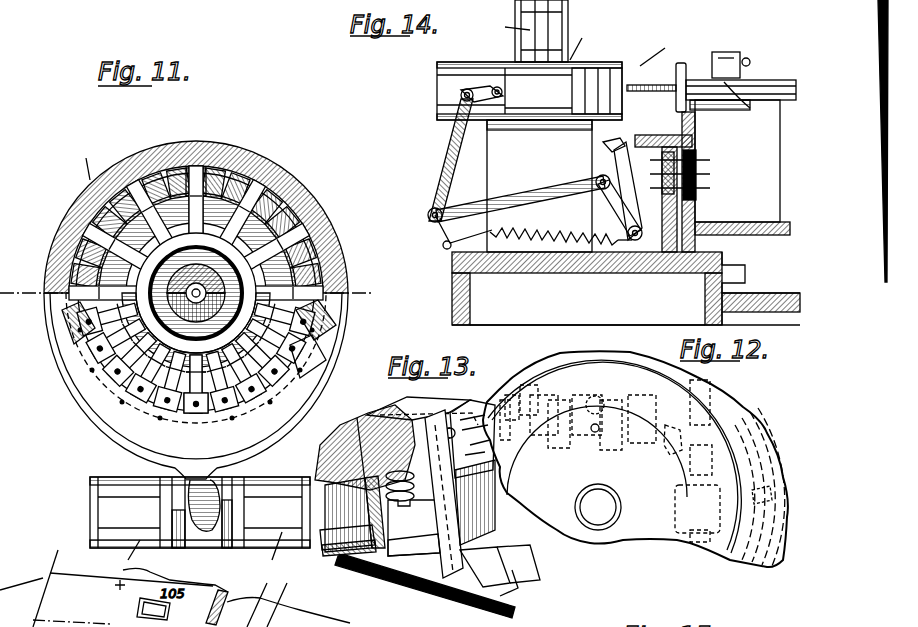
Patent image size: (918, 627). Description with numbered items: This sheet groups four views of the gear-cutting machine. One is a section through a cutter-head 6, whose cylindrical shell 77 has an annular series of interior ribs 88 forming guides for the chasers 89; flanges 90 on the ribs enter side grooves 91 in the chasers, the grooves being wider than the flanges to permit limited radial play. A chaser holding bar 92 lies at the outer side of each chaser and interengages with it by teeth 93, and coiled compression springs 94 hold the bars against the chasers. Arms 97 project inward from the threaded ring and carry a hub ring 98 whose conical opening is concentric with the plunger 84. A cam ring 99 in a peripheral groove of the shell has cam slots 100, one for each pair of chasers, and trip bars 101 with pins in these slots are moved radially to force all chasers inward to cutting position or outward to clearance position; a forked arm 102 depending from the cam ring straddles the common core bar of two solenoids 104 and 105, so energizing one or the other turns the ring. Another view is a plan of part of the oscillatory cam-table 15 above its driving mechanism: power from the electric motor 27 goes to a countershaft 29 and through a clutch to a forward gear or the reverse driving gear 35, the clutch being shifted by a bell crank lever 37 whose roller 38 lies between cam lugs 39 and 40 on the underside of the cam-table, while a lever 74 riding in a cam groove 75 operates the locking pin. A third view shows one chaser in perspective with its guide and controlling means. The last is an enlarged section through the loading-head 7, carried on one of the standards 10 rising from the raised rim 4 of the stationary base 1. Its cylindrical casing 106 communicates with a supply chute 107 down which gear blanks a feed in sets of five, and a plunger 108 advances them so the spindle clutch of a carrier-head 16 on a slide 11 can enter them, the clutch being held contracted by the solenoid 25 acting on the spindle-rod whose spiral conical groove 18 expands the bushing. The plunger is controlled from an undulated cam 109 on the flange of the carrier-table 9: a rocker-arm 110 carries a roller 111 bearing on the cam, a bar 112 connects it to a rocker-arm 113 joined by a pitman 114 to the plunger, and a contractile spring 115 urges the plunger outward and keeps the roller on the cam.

In FIG. 14, the stationary machine base 1 is at (786, 293).
In FIG. 14, the raised circular rim portion 4 is at (620, 270).
In FIG. 11, the cutter-head 6 is at (81, 164).
In FIG. 14, the loading-head 7 is at (582, 39).
In FIG. 14, the carrier-table 9 is at (772, 236).
In FIG. 14, the standards 10 is at (737, 161).
In FIG. 14, the slide 11 is at (772, 84).
In FIG. 12, the cam-table 15 is at (632, 540).
In FIG. 14, the carrier-head 16 is at (683, 64).
In FIG. 14, the spiral conical groove 18 is at (652, 86).
In FIG. 14, the solenoid 25 is at (726, 52).
In FIG. 12, the electric motor 27 is at (690, 518).
In FIG. 12, the countershaft 29 is at (594, 388).
In FIG. 12, the second gear 35 is at (552, 450).
In FIG. 12, the bell crank lever 37 is at (620, 395).
In FIG. 12, the roller 38 is at (640, 448).
In FIG. 12, the cam lug 39 is at (675, 455).
In FIG. 12, the cam lug 40 is at (612, 445).
In FIG. 12, the lever 74 is at (772, 495).
In FIG. 12, the cam groove 75 is at (760, 465).
In FIG. 11, the cylindrical shell 77 is at (205, 156).
In FIG. 13, the cylindrical shell 77 is at (338, 438).
In FIG. 11, the plunger 84 is at (176, 284).
In FIG. 13, the ribs 88 is at (372, 505).
In FIG. 11, the chasers 89 is at (290, 290).
In FIG. 13, the chasers 89 is at (512, 590).
In FIG. 13, the flanges 90 is at (348, 556).
In FIG. 13, the side grooves 91 is at (508, 578).
In FIG. 11, the chaser holding bar 92 is at (250, 228).
In FIG. 13, the chaser holding bar 92 is at (413, 513).
In FIG. 13, the teeth 93 is at (410, 540).
In FIG. 13, the coiled compression springs 94 is at (385, 418).
In FIG. 11, the arms 97 is at (130, 258).
In FIG. 11, the hub ring 98 is at (226, 250).
In FIG. 11, the cam ring 99 is at (128, 445).
In FIG. 11, the cam slots 100 is at (316, 362).
In FIG. 11, the trip bars 101 is at (320, 342).
In FIG. 13, the trip bars 101 is at (455, 530).
In FIG. 11, the forked arm 102 is at (220, 482).
In FIG. 11, the solenoid 104 is at (132, 554).
In FIG. 11, the solenoid 105 is at (272, 550).
In FIG. 14, the cylindrical casing 106 is at (603, 75).
In FIG. 14, the supply chute 107 is at (566, 18).
In FIG. 14, the plunger 108 is at (529, 91).
In FIG. 14, the undulated cam 109 is at (646, 144).
In FIG. 14, the rocker-arm 110 is at (615, 205).
In FIG. 14, the roller 111 is at (604, 146).
In FIG. 14, the bar 112 is at (526, 208).
In FIG. 14, the rocker-arm 113 is at (440, 158).
In FIG. 14, the pitman 114 is at (480, 90).
In FIG. 14, the contractile spring 115 is at (542, 250).
In FIG. 14, the gear blanks a is at (576, 42).